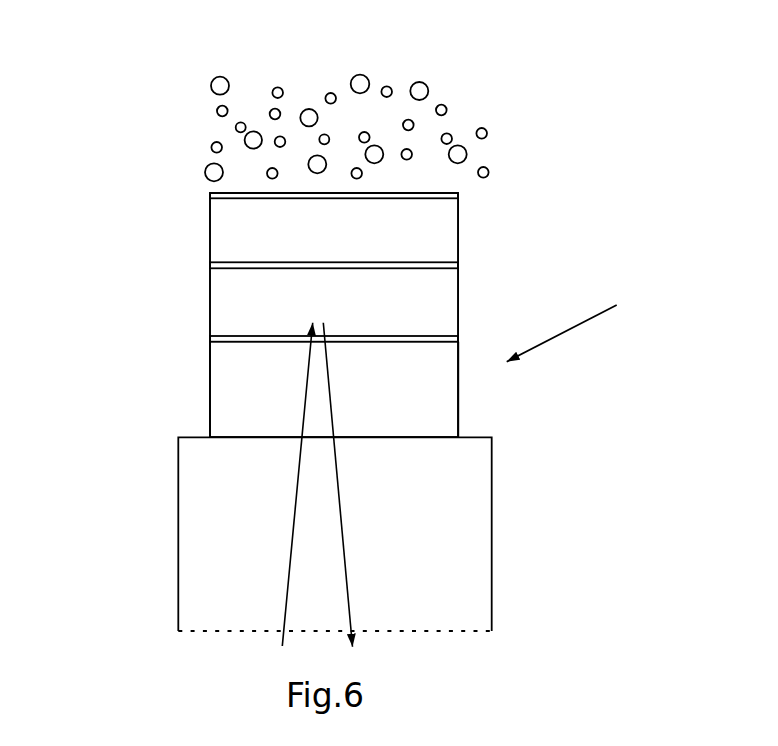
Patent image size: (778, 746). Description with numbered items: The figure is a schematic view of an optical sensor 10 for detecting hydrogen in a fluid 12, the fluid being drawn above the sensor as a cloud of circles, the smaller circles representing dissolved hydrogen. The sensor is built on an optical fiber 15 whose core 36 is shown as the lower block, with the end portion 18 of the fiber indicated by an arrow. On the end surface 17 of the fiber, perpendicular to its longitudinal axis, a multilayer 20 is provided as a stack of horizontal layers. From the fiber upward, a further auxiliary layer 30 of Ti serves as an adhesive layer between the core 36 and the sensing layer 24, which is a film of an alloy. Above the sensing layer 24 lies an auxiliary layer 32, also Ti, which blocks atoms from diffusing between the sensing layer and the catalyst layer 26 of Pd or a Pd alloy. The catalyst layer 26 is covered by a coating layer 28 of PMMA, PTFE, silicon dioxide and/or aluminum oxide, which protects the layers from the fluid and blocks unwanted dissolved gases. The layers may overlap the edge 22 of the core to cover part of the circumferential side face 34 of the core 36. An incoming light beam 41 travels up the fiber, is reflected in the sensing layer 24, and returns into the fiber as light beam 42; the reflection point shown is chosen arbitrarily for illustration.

The optical sensor 10 is at (32, 52).
The fluid 12 is at (393, 88).
The optical fiber 15 is at (467, 558).
The end surface 17 is at (420, 343).
The end portion 18 is at (576, 326).
The multilayer 20 is at (458, 263).
The edge 22 is at (458, 342).
The sensing layer 24 is at (224, 321).
The catalyst layer 26 is at (223, 218).
The coating layer 28 is at (423, 197).
The further auxiliary layer 30 is at (443, 337).
The auxiliary layer 32 is at (417, 264).
The circumferential side face 34 is at (210, 360).
The core 36 is at (227, 382).
The incoming light beam 41 is at (295, 495).
The light beam 42 is at (340, 524).